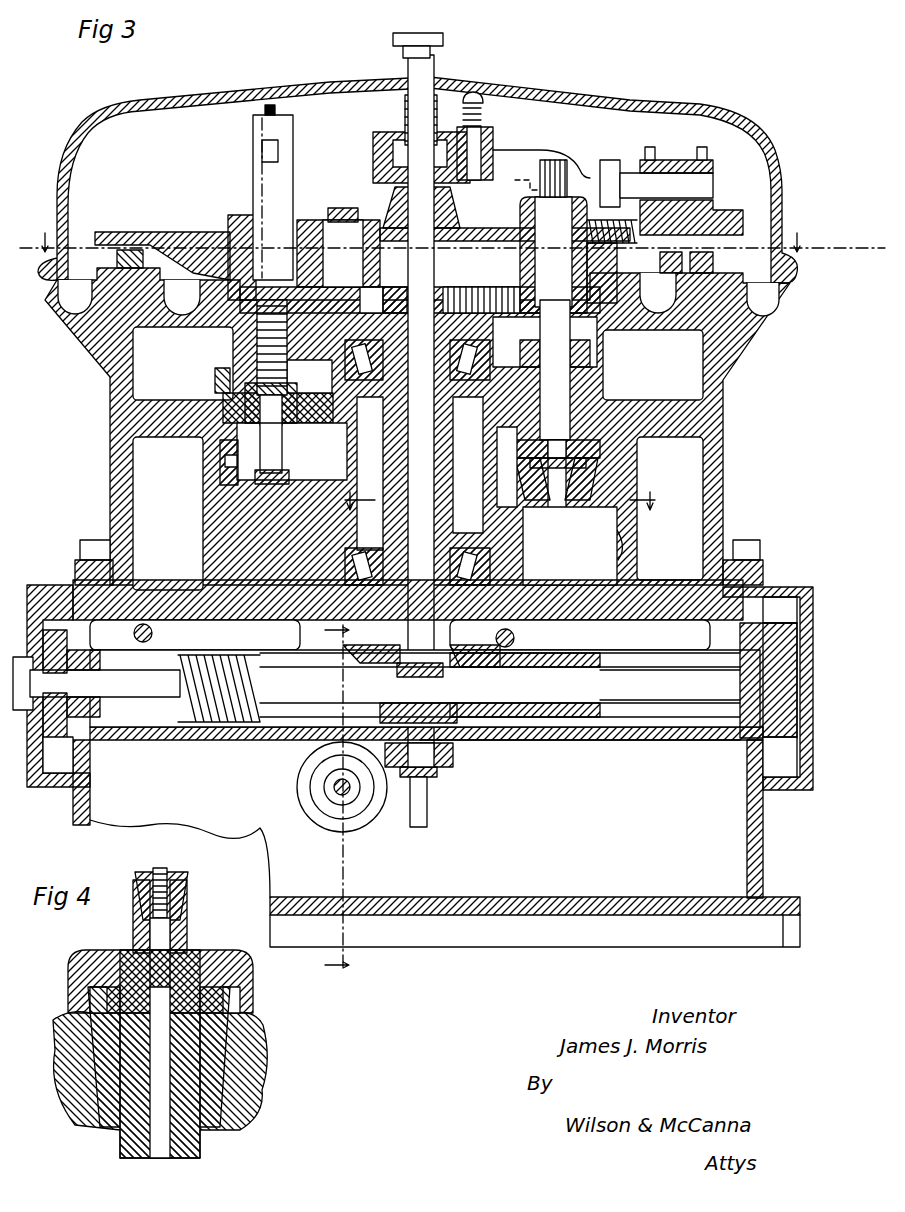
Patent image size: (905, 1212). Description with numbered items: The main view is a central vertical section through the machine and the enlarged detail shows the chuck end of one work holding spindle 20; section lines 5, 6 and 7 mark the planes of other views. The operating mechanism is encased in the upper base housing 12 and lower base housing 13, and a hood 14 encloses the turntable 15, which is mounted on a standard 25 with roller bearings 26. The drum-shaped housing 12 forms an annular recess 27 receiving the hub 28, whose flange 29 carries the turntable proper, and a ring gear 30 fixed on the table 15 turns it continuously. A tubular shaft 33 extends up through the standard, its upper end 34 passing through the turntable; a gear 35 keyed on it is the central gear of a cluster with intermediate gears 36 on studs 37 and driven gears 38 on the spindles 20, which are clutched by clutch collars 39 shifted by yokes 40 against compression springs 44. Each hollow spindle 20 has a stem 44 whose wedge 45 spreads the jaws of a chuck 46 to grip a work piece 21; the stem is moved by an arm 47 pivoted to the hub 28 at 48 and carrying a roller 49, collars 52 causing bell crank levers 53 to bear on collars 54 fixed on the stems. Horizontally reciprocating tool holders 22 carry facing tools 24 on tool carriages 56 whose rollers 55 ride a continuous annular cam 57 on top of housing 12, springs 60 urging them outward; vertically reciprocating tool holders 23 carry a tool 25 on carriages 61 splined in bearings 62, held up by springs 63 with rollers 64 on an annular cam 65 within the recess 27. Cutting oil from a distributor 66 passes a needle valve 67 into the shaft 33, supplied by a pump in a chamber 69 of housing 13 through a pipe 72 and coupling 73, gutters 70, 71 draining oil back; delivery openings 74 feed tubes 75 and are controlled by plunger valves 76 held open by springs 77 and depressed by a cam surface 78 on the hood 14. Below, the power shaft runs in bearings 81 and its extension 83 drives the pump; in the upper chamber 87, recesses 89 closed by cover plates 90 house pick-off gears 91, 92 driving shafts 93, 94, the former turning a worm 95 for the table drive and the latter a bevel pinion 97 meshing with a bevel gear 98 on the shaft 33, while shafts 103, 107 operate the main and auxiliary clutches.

In FIG. 3, the section line 5- 5 is at (452, 240).
In FIG. 3, the section line 6- 6 is at (504, 500).
In FIG. 3, the section line 7- 7 is at (336, 800).
In FIG. 3, the upper base housing 12 is at (720, 455).
In FIG. 3, the lower base housing 13 is at (765, 845).
In FIG. 3, the hood 14 is at (660, 78).
In FIG. 3, the turntable 15 is at (215, 225).
In FIG. 4, the turntable 15 is at (255, 1033).
In FIG. 3, the work holding spindle 20 is at (535, 240).
In FIG. 4, the work holding spindle 20 is at (200, 1148).
In FIG. 3, the work piece 21 is at (518, 179).
In FIG. 3, the horizontally reciprocating tool holder 22 is at (625, 170).
In FIG. 3, the vertically reciprocating tool holder 23 is at (295, 150).
In FIG. 3, the facing tool 24 is at (608, 160).
In FIG. 3, the standard 25 is at (262, 155).
In FIG. 3, the roller bearings 26 is at (345, 352).
In FIG. 3, the annular recess 27 is at (640, 485).
In FIG. 3, the hub 28 is at (337, 460).
In FIG. 3, the flange 29 is at (300, 395).
In FIG. 3, the ring gear 30 is at (215, 378).
In FIG. 3, the tubular shaft 33 is at (420, 550).
In FIG. 3, the upper extension of tubular shaft 34 is at (452, 205).
In FIG. 3, the gear 35 is at (390, 285).
In FIG. 3, the intermediate gears 36 is at (480, 285).
In FIG. 3, the studs 37 is at (338, 247).
In FIG. 3, the driven gears 38 is at (653, 352).
In FIG. 3, the clutch collar 39 is at (525, 367).
In FIG. 3, the yoke 40 is at (510, 317).
In FIG. 3, the stem 44 is at (570, 360).
In FIG. 4, the stem 44 is at (155, 1135).
In FIG. 4, the wedge 45 is at (185, 887).
In FIG. 3, the chuck 46 is at (567, 165).
In FIG. 4, the chuck 46 is at (190, 930).
In FIG. 3, the arm 47 is at (585, 570).
In FIG. 3, the pivot 48 is at (520, 532).
In FIG. 3, the roller 49 is at (630, 542).
In FIG. 3, the collar 52 is at (598, 488).
In FIG. 3, the bell crank lever 53 is at (600, 460).
In FIG. 3, the collar 54 is at (530, 490).
In FIG. 3, the roller 55 is at (662, 290).
In FIG. 3, the tool carriage 56 is at (680, 160).
In FIG. 3, the continuous annular cam 57 is at (716, 262).
In FIG. 3, the spring 60 is at (618, 218).
In FIG. 3, the vertically reciprocable carriage 61 is at (92, 306).
In FIG. 3, the bearing 62 is at (235, 215).
In FIG. 3, the spring 63 is at (257, 345).
In FIG. 3, the roller 64 is at (232, 482).
In FIG. 3, the continuous annular cam 65 is at (203, 437).
In FIG. 3, the distributor 66 is at (378, 132).
In FIG. 3, the needle valve 67 is at (393, 152).
In FIG. 3, the chamber 69 is at (655, 897).
In FIG. 3, the annular gutter 70 is at (770, 308).
In FIG. 3, the annular gutter 71 is at (185, 312).
In FIG. 3, the pipe 72 is at (428, 800).
In FIG. 3, the coupling 73 is at (453, 758).
In FIG. 3, the delivery opening 74 is at (440, 120).
In FIG. 3, the tube 75 is at (520, 147).
In FIG. 3, the plunger valve 76 is at (493, 140).
In FIG. 3, the spring 77 is at (486, 112).
In FIG. 3, the cam surface 78 is at (365, 85).
In FIG. 3, the bearing 81 is at (365, 810).
In FIG. 3, the shaft extension 83 is at (340, 795).
In FIG. 3, the upper chamber 87 is at (690, 727).
In FIG. 3, the recess 89 is at (65, 575).
In FIG. 3, the cover plate 90 is at (36, 590).
In FIG. 3, the pick-off gears 91 is at (55, 745).
In FIG. 3, the pick-off gears 92 is at (790, 750).
In FIG. 3, the shaft 93 is at (90, 690).
In FIG. 3, the shaft 94 is at (670, 670).
In FIG. 3, the worm 95 is at (240, 658).
In FIG. 3, the bevel pinion 97 is at (470, 670).
In FIG. 3, the bevel gear 98 is at (352, 670).
In FIG. 3, the shaft 103 is at (515, 636).
In FIG. 3, the shaft 107 is at (153, 632).